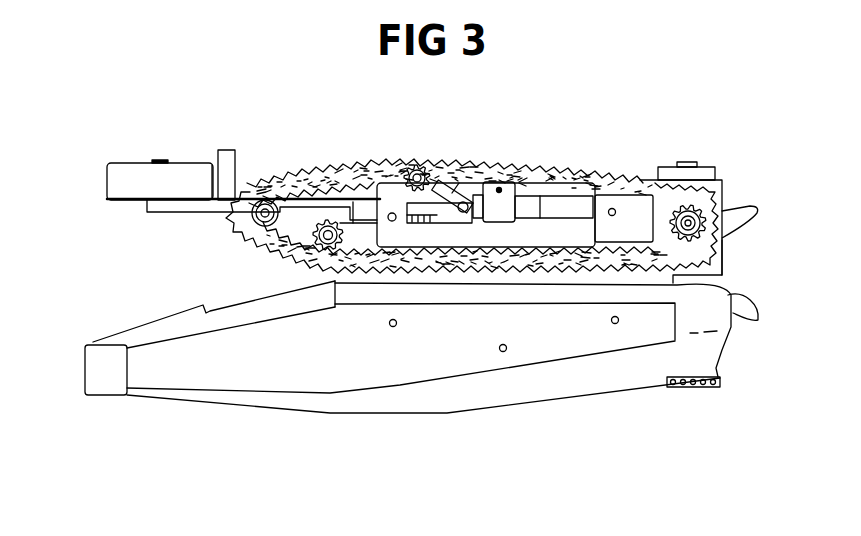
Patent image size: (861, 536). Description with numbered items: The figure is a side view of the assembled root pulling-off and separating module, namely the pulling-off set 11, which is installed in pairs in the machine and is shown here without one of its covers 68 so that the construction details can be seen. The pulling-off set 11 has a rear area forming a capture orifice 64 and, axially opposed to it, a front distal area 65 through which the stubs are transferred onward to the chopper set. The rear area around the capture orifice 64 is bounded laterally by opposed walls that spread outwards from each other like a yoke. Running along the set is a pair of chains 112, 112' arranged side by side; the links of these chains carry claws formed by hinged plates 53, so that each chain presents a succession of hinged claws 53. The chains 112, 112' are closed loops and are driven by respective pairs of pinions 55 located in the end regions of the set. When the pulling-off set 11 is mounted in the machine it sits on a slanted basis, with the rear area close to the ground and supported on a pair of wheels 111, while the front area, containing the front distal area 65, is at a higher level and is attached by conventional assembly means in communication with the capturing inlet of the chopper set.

The pulling-off set 11 is at (703, 98).
The hinged plates 53 is at (375, 180).
The pinions 55 is at (720, 202).
The capture orifice 64 is at (265, 272).
The front distal area 65 is at (738, 272).
The cover 68 is at (285, 372).
The wheels 111 is at (135, 180).
The chain 112 is at (491, 346).
The chain 112' is at (482, 194).